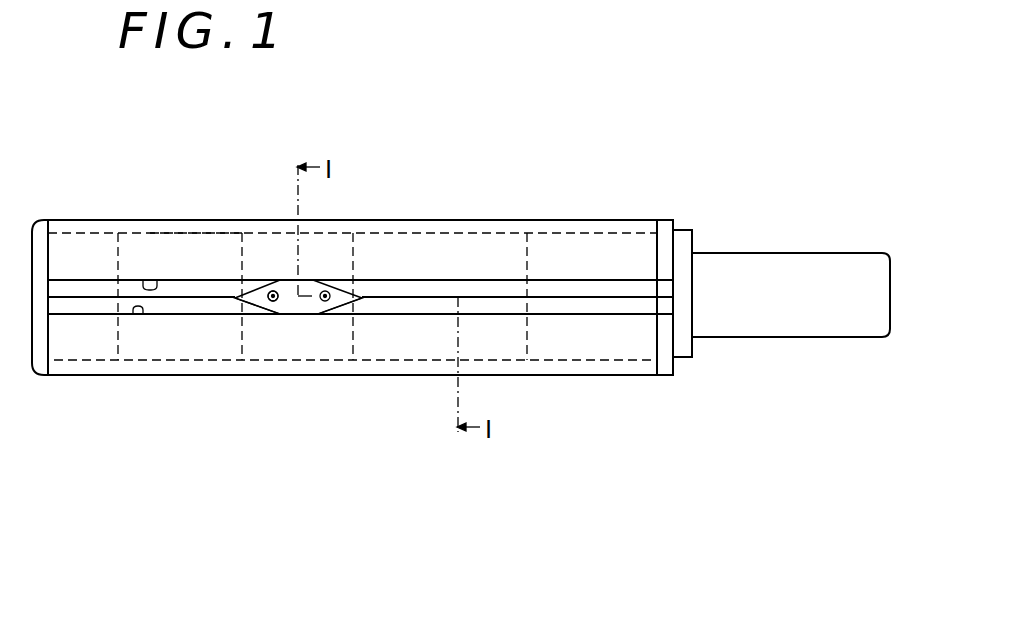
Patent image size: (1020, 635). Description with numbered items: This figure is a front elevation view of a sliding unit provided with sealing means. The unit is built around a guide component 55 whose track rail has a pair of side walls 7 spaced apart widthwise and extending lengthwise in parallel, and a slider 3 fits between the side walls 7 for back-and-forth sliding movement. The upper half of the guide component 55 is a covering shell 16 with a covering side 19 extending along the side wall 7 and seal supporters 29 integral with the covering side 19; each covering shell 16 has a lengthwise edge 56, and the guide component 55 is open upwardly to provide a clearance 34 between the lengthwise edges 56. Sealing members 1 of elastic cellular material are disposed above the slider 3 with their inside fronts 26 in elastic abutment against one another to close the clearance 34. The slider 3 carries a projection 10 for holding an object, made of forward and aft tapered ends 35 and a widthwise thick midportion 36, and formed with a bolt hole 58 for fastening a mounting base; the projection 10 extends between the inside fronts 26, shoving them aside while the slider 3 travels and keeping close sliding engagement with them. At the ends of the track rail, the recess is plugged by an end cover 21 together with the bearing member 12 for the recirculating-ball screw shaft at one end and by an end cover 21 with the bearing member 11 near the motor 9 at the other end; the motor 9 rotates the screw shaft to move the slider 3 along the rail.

The sealing member 1 is at (478, 288).
The slider 3 is at (270, 262).
The side wall 7 is at (548, 233).
The motor 9 is at (777, 317).
The projection 10 is at (288, 303).
The bearing member 11 is at (603, 258).
The bearing member 12 is at (80, 265).
The covering shell 16 is at (431, 240).
The covering side 19 is at (203, 222).
The end cover 21 is at (42, 353).
The inside front 26 is at (551, 296).
The seal supporter 29 is at (387, 250).
The clearance 34 is at (413, 303).
The tapered end 35 is at (266, 305).
The midportion 36 is at (305, 314).
The guide component 55 is at (692, 240).
The lengthwise edge 56 is at (157, 280).
The bolt hole 58 is at (271, 291).